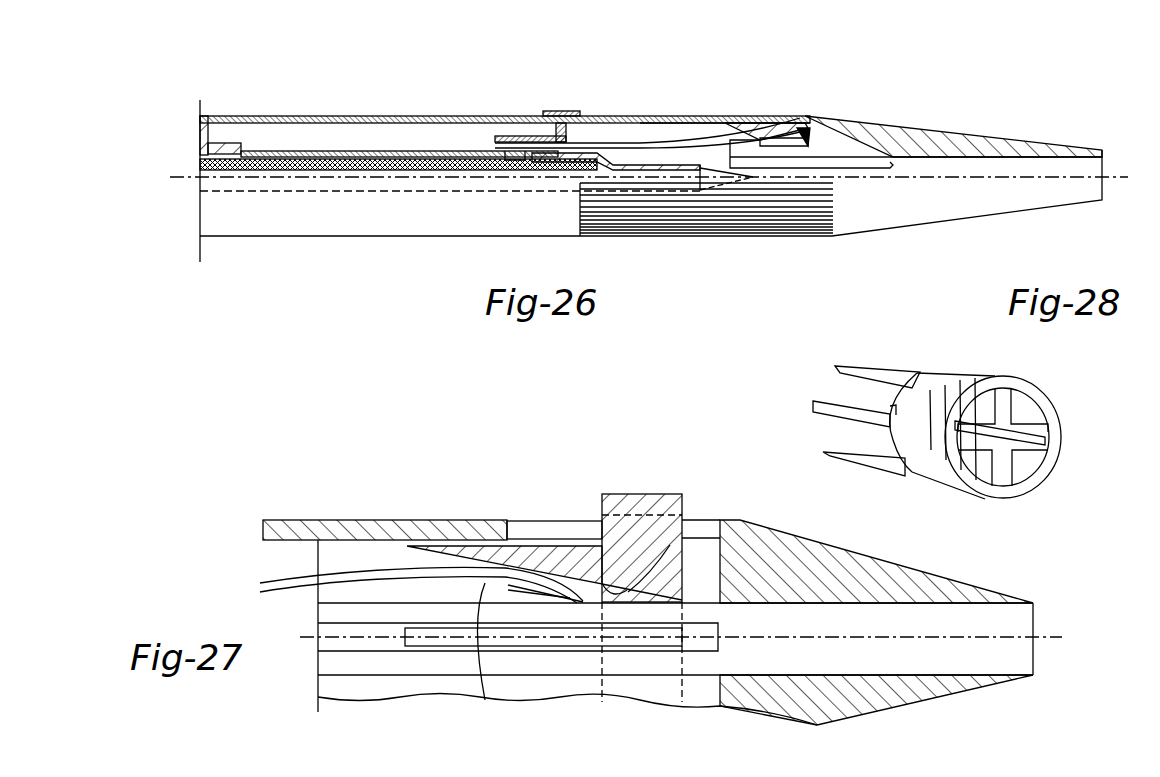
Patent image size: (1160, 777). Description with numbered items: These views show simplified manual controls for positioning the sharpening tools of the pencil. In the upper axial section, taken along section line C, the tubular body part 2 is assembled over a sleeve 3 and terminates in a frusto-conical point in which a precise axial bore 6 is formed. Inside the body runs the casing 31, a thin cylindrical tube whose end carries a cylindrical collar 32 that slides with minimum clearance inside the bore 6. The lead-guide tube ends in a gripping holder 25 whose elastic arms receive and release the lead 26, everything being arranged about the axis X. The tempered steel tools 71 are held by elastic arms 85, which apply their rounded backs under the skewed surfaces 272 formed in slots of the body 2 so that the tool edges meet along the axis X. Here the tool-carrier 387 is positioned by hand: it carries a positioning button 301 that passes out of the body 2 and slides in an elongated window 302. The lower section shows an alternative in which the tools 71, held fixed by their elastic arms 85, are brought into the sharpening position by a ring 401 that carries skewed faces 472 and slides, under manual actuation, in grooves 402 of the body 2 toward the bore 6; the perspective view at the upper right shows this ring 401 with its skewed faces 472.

In FIG. 26, the body part 2 is at (428, 117).
In FIG. 27, the body part 2 is at (322, 520).
In FIG. 26, the sleeve 3 is at (207, 118).
In FIG. 26, the axial bore 6 is at (975, 158).
In FIG. 27, the axial bore 6 is at (925, 608).
In FIG. 26, the gripping holder 25 is at (600, 180).
In FIG. 26, the lead 26 is at (312, 186).
In FIG. 26, the casing 31 is at (455, 170).
In FIG. 26, the cylindrical collar 32 is at (562, 164).
In FIG. 26, the tools 71 is at (765, 128).
In FIG. 27, the tools 71 is at (531, 653).
In FIG. 26, the elastic arms 85 is at (598, 146).
In FIG. 27, the elastic arms 85 is at (352, 571).
In FIG. 26, the skewed surfaces 272 is at (862, 138).
In FIG. 26, the positioning button 301 is at (561, 111).
In FIG. 26, the elongated window 302 is at (640, 116).
In FIG. 26, the tool-carrier 387 is at (290, 151).
In FIG. 27, the ring 401 is at (612, 497).
In FIG. 28, the ring 401 is at (985, 384).
In FIG. 27, the grooves 402 is at (528, 521).
In FIG. 27, the skewed faces 472 is at (685, 522).
In FIG. 28, the skewed faces 472 is at (852, 373).
In FIG. 26, the section line C is at (199, 177).
In FIG. 26, the axis X is at (640, 177).
In FIG. 27, the axis X is at (676, 637).